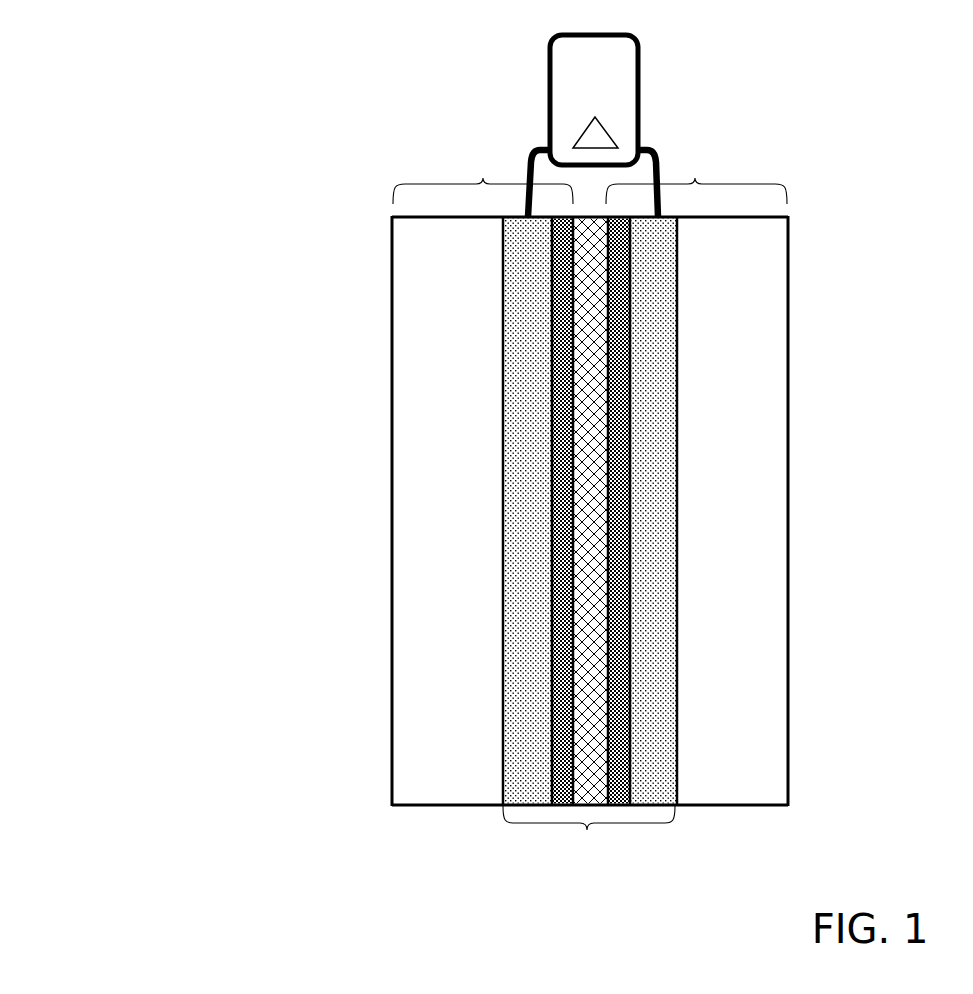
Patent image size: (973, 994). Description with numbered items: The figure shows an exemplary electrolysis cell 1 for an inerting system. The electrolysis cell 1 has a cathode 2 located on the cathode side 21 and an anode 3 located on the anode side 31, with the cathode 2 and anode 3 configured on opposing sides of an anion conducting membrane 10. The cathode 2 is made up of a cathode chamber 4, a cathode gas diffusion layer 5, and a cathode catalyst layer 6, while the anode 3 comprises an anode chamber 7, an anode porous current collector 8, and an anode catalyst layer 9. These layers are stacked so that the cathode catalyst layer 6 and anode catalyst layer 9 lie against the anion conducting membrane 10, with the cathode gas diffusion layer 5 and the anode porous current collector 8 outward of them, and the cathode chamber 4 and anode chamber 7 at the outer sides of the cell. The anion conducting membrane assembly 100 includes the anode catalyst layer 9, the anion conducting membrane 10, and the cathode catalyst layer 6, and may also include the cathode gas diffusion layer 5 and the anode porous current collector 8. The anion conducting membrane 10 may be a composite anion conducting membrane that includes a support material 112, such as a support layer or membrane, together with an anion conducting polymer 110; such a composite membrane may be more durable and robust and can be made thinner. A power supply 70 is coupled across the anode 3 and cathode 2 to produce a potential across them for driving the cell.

The electrolysis cell 1 is at (258, 204).
The cathode 2 is at (483, 183).
The anode 3 is at (695, 183).
The cathode chamber 4 is at (442, 363).
The cathode gas diffusion layer 5 is at (530, 472).
The cathode catalyst layer 6 is at (557, 605).
The anode chamber 7 is at (738, 298).
The anode porous current collector 8 is at (652, 430).
The anode catalyst layer 9 is at (625, 547).
The anion conducting membrane 10 is at (610, 677).
The cathode side 21 is at (413, 697).
The anode side 31 is at (770, 733).
The power supply 70 is at (575, 83).
The anion conducting membrane assembly 100 is at (587, 830).
The anion conducting polymer 110 is at (573, 670).
The support material 112 is at (587, 737).